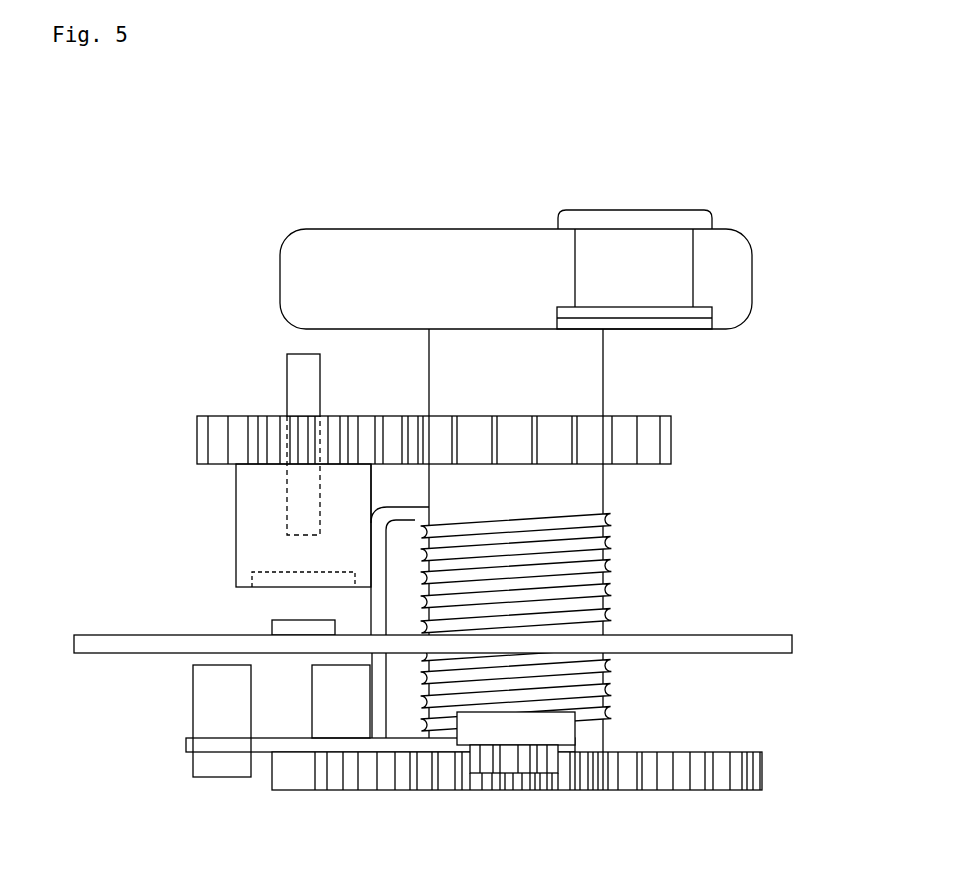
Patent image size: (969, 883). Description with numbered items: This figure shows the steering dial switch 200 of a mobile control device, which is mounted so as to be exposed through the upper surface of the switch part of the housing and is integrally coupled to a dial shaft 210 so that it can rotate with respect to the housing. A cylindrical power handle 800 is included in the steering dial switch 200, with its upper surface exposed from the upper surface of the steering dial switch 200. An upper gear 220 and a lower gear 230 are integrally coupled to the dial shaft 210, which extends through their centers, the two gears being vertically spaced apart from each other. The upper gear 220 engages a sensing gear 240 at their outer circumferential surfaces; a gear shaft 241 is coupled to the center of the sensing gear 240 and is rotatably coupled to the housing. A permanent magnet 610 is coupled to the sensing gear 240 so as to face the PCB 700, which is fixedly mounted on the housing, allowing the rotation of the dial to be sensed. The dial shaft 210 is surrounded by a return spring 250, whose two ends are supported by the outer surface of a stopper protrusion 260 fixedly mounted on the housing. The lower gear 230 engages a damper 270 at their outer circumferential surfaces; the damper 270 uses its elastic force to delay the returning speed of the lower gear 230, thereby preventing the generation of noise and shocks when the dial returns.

The steering dial switch 200 is at (385, 248).
The power handle 800 is at (637, 218).
The dial shaft 210 is at (595, 373).
The upper gear 220 is at (668, 438).
The gear shaft 241 is at (295, 375).
The sensing gear 240 is at (253, 542).
The return spring 250 is at (612, 542).
The permanent magnet 610 is at (255, 573).
The PCB 700 is at (790, 645).
The stopper protrusion 260 is at (207, 702).
The lower gear 230 is at (750, 772).
The damper 270 is at (513, 765).